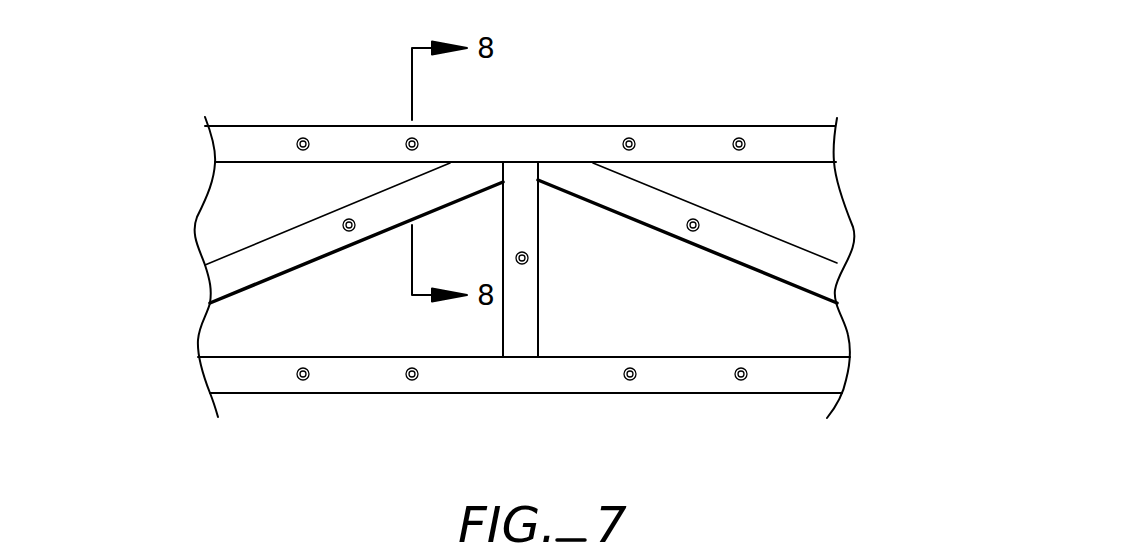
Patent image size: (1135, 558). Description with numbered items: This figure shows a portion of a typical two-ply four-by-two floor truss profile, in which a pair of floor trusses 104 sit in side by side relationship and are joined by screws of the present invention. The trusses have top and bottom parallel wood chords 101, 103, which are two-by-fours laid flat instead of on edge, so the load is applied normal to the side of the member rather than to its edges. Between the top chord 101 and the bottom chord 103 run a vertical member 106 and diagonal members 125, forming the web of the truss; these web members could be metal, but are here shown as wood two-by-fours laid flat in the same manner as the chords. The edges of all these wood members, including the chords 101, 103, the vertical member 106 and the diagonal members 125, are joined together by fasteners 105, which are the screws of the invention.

The top chord 101 is at (800, 130).
The bottom chord 103 is at (775, 385).
The floor trusses 104 is at (545, 86).
The fasteners 105 is at (408, 137).
The vertical member 106 is at (525, 308).
The diagonal members 125 is at (303, 223).